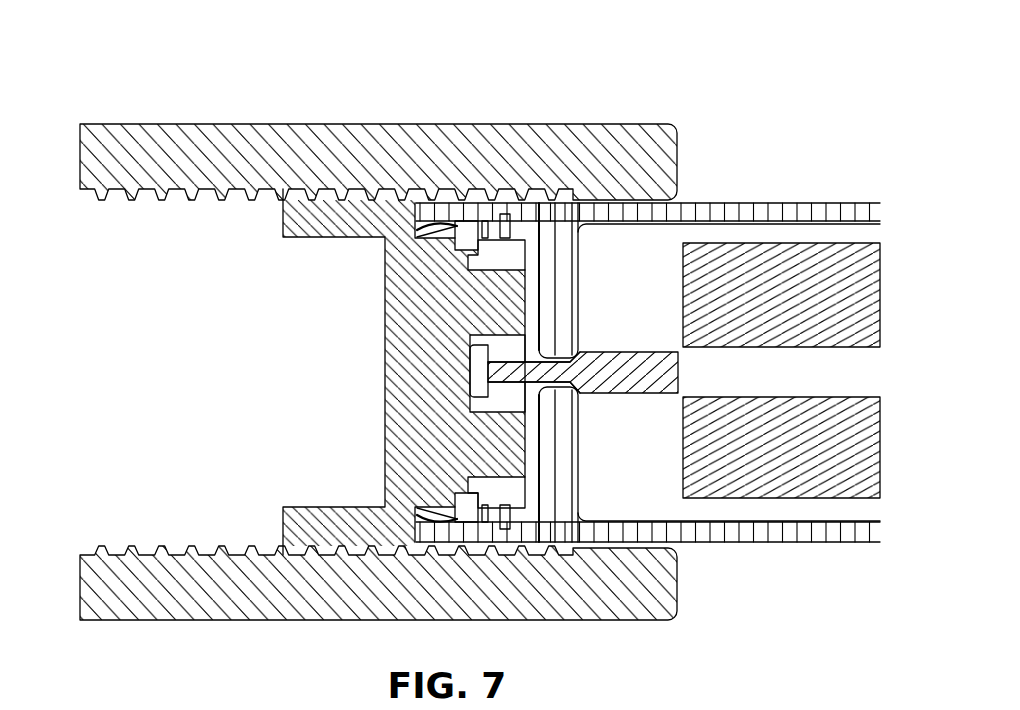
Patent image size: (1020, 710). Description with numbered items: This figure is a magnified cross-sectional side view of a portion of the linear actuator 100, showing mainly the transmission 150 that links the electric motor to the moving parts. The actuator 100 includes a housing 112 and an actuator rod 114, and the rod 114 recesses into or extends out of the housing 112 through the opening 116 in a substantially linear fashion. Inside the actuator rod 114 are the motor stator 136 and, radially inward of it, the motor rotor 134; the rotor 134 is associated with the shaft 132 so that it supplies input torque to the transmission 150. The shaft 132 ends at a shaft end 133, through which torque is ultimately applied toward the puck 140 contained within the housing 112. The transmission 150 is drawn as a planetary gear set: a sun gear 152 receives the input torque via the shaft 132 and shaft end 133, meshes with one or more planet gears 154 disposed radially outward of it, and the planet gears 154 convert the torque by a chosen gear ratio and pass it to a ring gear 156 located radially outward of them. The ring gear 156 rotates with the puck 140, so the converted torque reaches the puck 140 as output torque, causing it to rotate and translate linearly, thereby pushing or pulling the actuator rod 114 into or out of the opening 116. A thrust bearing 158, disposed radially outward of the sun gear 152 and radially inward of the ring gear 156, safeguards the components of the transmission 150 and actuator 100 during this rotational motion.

The linear actuator 100 is at (447, 92).
The housing 112 is at (345, 118).
The actuator rod 114 is at (705, 543).
The opening 116 is at (692, 196).
The shaft 132 is at (598, 387).
The shaft end 133 is at (533, 395).
The rotor 134 is at (596, 376).
The stator 136 is at (763, 268).
The puck 140 is at (378, 295).
The transmission 150 is at (528, 226).
The sun gear 152 is at (503, 332).
The planet gears 154 is at (506, 256).
The ring gear 156 is at (490, 218).
The thrust bearing 158 is at (417, 236).